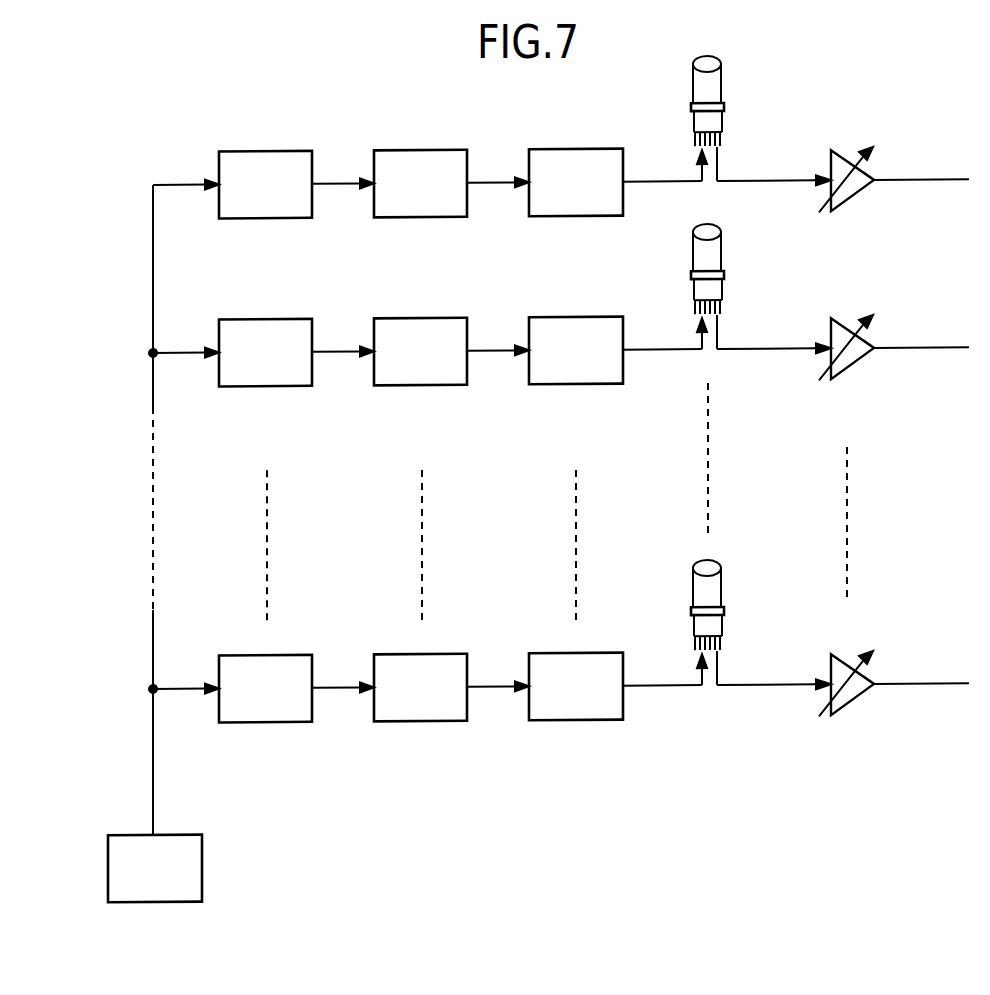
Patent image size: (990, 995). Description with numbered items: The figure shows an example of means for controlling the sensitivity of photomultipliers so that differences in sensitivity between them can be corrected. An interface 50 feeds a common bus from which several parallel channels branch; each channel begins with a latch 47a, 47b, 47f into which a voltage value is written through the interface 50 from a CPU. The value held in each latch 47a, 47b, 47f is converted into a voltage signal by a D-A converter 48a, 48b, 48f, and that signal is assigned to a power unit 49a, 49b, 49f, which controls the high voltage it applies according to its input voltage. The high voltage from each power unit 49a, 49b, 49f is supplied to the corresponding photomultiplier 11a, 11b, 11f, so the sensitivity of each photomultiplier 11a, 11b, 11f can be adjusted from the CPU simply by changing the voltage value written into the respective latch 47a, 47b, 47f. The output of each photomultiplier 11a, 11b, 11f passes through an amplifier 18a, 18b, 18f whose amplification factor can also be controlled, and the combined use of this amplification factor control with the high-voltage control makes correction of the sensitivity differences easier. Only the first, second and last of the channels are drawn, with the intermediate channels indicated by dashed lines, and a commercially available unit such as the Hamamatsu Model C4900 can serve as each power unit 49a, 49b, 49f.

The latch 47a is at (262, 220).
The latch 47b is at (262, 388).
The latch 47f is at (262, 724).
The D-A converter 48a is at (418, 220).
The D-A converter 48b is at (418, 388).
The D-A converter 48f is at (418, 724).
The power unit 49a is at (573, 220).
The power unit 49b is at (573, 388).
The power unit 49f is at (573, 724).
The photomultiplier 11a is at (724, 114).
The photomultiplier 11b is at (724, 282).
The photomultiplier 11f is at (724, 618).
The amplifier 18a is at (856, 199).
The amplifier 18b is at (856, 367).
The amplifier 18f is at (856, 703).
The interface 50 is at (202, 872).